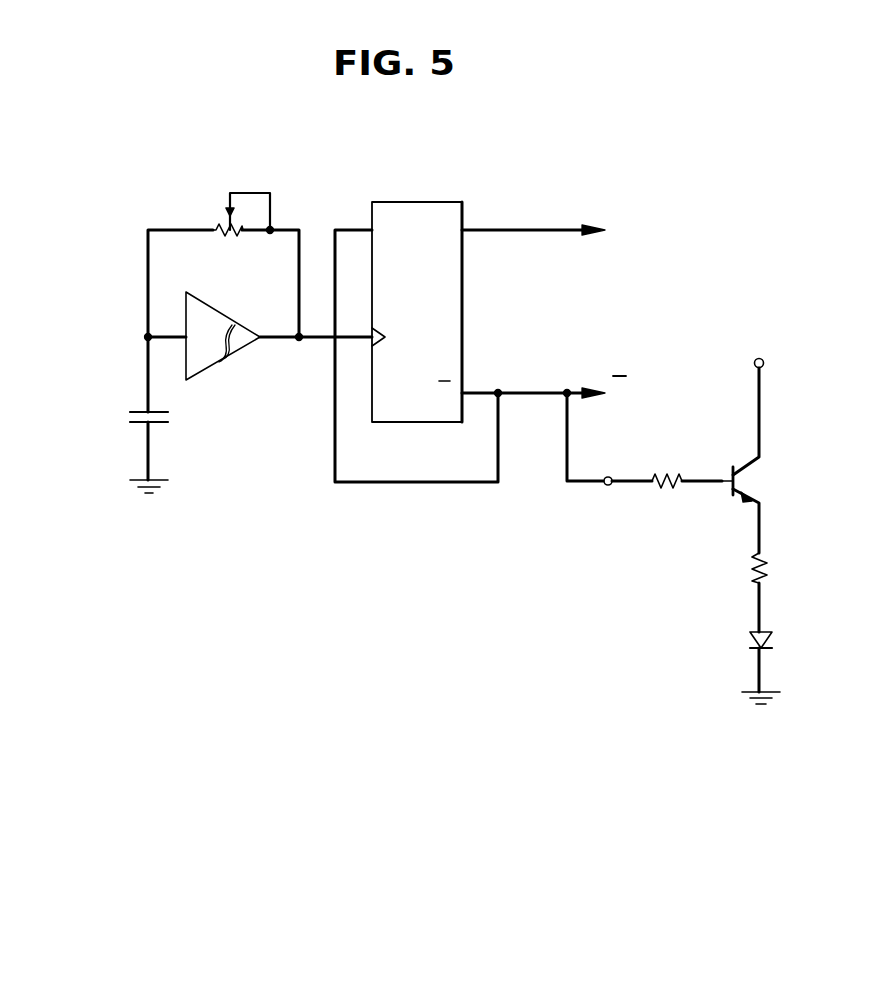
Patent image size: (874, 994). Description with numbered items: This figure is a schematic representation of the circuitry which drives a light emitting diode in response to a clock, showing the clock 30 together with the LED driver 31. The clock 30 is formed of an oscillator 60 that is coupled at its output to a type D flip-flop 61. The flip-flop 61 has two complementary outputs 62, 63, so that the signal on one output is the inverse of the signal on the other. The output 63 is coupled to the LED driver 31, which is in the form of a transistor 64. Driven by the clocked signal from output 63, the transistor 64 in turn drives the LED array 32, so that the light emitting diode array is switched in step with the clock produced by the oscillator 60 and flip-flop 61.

The clock 30 is at (228, 481).
The LED driver 31 is at (722, 530).
The LED array 32 is at (750, 640).
The oscillator 60 is at (233, 354).
The type D flip-flop 61 is at (418, 202).
The output 62 is at (498, 230).
The output 63 is at (515, 393).
The transistor 64 is at (741, 484).